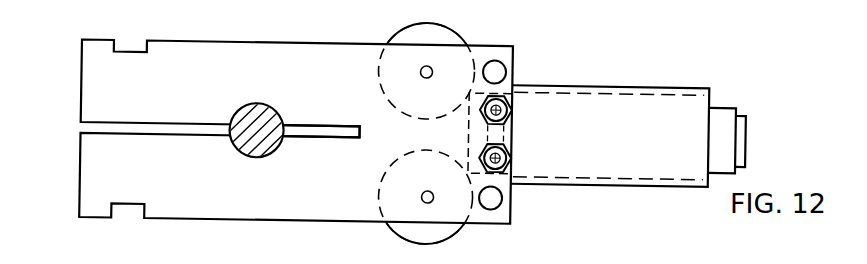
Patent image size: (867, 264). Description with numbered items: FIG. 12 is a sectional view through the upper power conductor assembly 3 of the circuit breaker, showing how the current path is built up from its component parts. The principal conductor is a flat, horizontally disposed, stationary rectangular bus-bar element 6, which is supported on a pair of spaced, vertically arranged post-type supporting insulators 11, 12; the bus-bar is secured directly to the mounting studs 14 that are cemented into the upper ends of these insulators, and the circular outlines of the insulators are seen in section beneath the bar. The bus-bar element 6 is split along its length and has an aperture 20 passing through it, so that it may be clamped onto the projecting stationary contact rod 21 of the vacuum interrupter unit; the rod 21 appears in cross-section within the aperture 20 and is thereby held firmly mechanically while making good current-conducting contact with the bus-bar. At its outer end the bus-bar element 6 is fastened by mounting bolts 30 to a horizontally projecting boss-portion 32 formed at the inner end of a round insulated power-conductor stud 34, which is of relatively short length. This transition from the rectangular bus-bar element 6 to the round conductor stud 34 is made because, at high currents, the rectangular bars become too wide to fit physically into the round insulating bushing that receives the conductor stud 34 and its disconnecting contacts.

The upper power conductor assembly 3 is at (593, 79).
The bus-bar element 6 is at (82, 61).
The post-type supporting insulator 11 is at (445, 236).
The post-type supporting insulator 12 is at (437, 18).
The mounting stud 14 is at (421, 67).
The aperture 20 is at (277, 147).
The stationary contact rod 21 is at (239, 108).
The mounting bolt 30 is at (513, 104).
The boss-portion 32 is at (470, 87).
The insulated power-conductor stud 34 is at (617, 172).